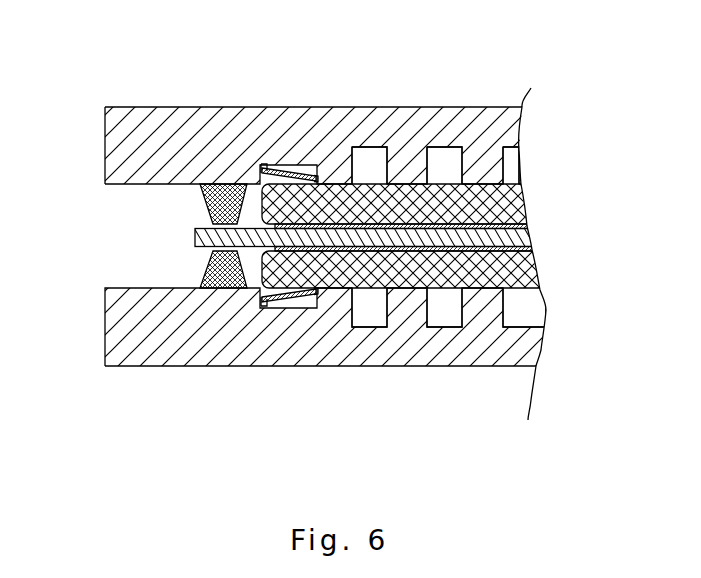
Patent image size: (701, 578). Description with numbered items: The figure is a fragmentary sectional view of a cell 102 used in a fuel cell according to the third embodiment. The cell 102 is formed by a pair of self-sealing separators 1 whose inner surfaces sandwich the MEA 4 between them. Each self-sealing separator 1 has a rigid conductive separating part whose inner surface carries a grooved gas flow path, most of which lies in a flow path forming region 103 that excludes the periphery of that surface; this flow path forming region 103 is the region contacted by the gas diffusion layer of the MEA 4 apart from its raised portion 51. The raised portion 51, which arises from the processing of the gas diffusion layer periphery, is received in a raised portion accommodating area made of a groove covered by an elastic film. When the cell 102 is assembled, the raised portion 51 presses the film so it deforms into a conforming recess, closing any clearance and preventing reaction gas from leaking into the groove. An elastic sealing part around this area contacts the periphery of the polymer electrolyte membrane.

The self-sealing separator 1 is at (440, 106).
The MEA 4 is at (612, 143).
The raised portion 51 is at (268, 190).
The cell 102 is at (118, 88).
The flow path forming region 103 is at (415, 194).